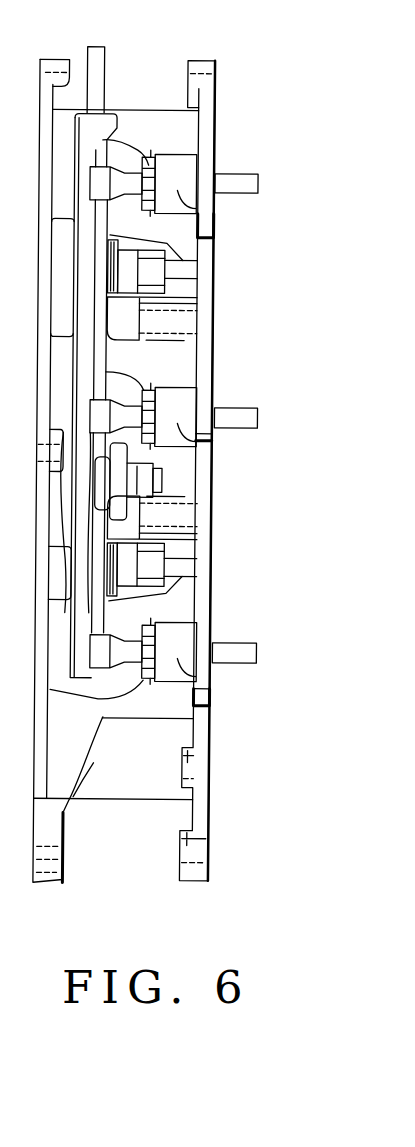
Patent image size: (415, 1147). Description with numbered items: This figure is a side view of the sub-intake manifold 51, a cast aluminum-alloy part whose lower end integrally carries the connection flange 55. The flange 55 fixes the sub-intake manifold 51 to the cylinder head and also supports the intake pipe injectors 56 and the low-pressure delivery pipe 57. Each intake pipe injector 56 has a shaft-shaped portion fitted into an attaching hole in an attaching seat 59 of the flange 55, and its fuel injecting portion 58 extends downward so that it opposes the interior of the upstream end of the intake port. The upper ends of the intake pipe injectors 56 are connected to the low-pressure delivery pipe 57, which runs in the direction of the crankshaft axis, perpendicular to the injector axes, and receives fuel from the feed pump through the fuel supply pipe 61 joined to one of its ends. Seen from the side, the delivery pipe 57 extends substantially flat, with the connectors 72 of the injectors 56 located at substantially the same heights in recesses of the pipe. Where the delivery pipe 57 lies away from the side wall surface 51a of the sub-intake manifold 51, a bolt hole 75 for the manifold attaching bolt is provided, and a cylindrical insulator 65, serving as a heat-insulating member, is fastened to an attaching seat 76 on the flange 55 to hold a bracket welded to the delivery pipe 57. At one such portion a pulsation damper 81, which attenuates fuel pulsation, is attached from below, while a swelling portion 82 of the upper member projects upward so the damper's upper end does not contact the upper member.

The sub-intake manifold 51 is at (116, 801).
The side wall surface 51a is at (36, 112).
The connection flange 55 is at (205, 738).
The intake pipe injector 56 is at (100, 151).
The low-pressure delivery pipe 57 is at (72, 280).
The fuel injecting portion 58 is at (240, 172).
The attaching seat 59 is at (172, 195).
The fuel supply pipe 61 is at (101, 65).
The insulator 65 is at (148, 248).
The connector 72 is at (100, 181).
The bolt hole 75 is at (164, 340).
The attaching seat 76 is at (151, 282).
The pulsation damper 81 is at (160, 480).
The swelling portion 82 is at (53, 489).